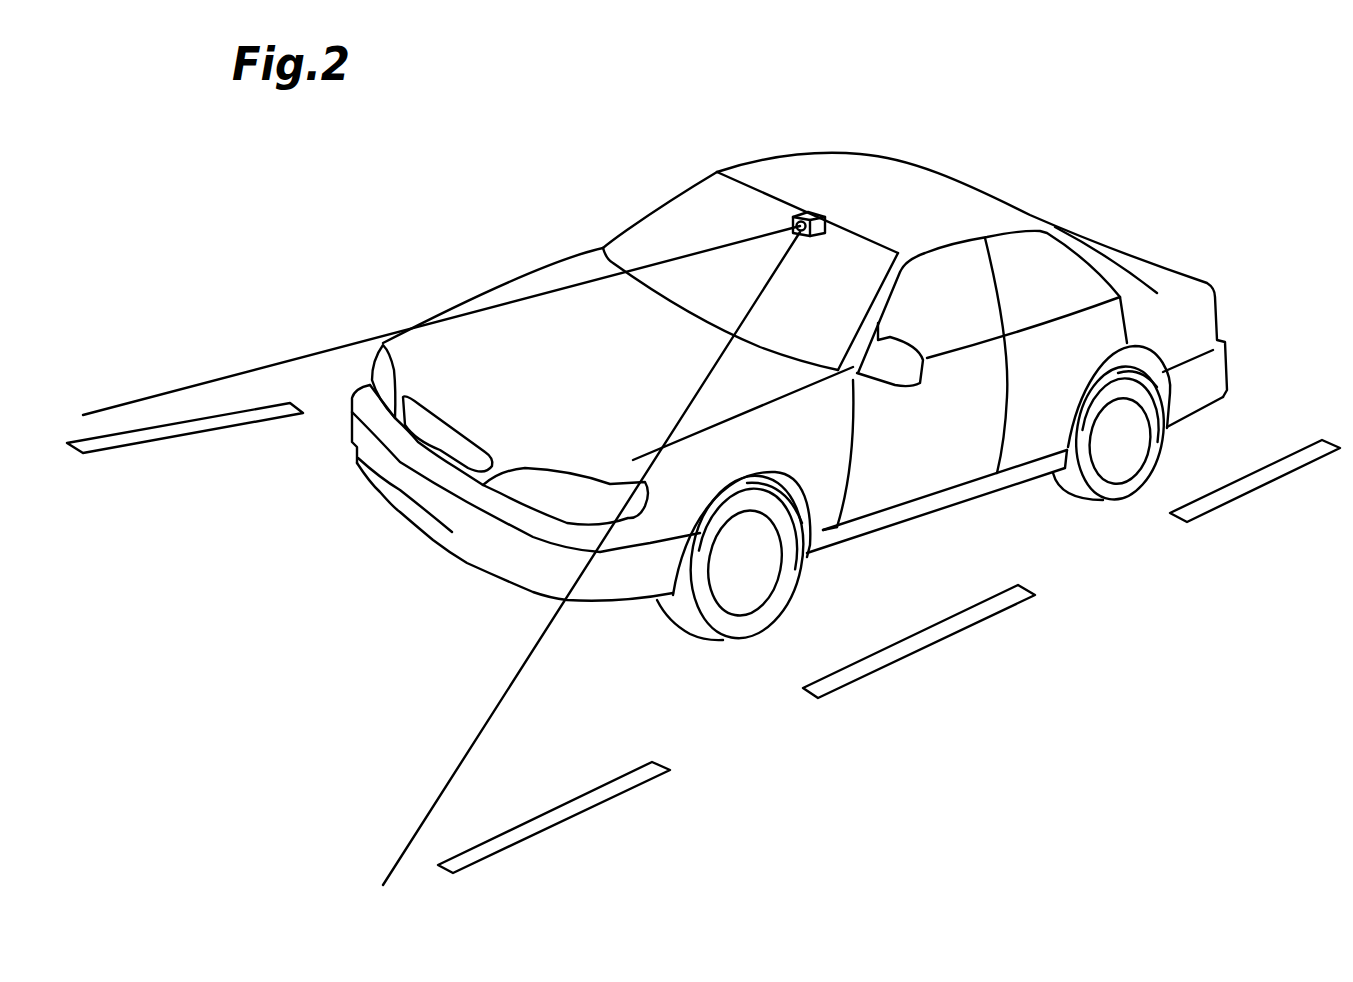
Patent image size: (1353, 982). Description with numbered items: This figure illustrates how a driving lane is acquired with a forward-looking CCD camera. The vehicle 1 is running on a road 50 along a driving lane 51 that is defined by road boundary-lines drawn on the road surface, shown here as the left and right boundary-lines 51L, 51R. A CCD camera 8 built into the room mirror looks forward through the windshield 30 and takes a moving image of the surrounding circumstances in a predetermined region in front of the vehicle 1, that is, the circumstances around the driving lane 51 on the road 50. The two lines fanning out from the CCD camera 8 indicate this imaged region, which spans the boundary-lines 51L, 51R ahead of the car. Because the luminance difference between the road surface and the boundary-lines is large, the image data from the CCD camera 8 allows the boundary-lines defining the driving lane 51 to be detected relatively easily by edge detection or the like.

The vehicle 1 is at (987, 190).
The CCD camera 8 is at (833, 228).
The windshield 30 is at (663, 217).
The road 50 is at (933, 775).
The driving lane 51 is at (677, 707).
The left boundary-line of driving lane 51L is at (950, 628).
The right boundary-line of driving lane 51R is at (177, 430).